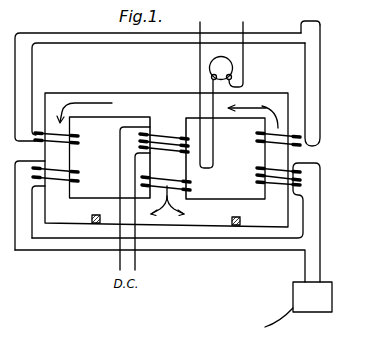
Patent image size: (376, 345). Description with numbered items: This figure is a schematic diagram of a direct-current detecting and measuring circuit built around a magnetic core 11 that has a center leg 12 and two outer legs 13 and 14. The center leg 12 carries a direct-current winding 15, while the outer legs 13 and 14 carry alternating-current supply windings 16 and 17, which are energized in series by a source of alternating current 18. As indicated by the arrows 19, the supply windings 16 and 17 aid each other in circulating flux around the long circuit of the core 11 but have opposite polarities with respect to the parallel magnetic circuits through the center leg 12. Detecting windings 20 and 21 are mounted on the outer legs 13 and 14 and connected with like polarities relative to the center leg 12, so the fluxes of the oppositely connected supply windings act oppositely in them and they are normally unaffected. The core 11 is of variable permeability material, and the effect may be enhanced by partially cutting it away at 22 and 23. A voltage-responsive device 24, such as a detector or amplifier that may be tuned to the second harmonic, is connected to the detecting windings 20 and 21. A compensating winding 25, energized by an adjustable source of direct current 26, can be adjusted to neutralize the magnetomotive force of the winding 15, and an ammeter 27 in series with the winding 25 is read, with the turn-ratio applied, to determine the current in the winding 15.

The magnetic core 11 is at (175, 92).
The center leg 12 is at (168, 158).
The outer leg 13 is at (71, 150).
The outer leg 14 is at (263, 157).
The direct-current winding 15 is at (160, 129).
The alternating-current supply winding 16 is at (79, 134).
The alternating-current supply winding 17 is at (256, 135).
The source of alternating current 18 is at (321, 29).
The arrows 19 is at (113, 103).
The detecting winding 20 is at (78, 173).
The detecting winding 21 is at (259, 175).
The cut-away portion 22 is at (92, 218).
The cut-away portion 23 is at (232, 220).
The voltage-responsive device 24 is at (250, 300).
The compensating winding 25 is at (188, 179).
The adjustable source of direct current 26 is at (200, 22).
The ammeter 27 is at (233, 70).